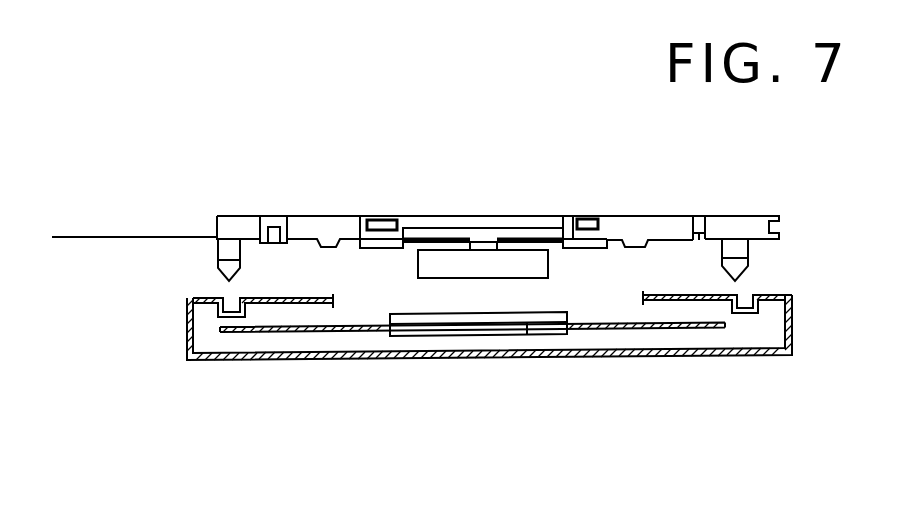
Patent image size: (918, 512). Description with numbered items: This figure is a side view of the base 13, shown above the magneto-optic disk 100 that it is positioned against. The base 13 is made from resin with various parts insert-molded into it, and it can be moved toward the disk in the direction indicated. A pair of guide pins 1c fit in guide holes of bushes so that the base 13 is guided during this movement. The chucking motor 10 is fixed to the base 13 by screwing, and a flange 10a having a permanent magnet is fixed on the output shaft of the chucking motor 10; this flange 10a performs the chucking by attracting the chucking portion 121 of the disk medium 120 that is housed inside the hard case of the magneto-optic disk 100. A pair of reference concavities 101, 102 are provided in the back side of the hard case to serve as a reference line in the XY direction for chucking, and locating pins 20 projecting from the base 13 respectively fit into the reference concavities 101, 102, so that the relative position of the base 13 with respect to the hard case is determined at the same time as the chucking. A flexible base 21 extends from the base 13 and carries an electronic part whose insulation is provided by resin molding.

The guide pins 1c is at (363, 284).
The chucking motor 10 is at (463, 226).
The flange 10a is at (452, 268).
The base 13 is at (740, 212).
The locating pins 20 is at (220, 267).
The flexible base 21 is at (93, 237).
The magneto-optic disk 100 is at (748, 368).
The reference concavity 101 is at (757, 302).
The reference concavity 102 is at (220, 303).
The disk medium 120 is at (668, 328).
The chucking portion 121 is at (527, 334).